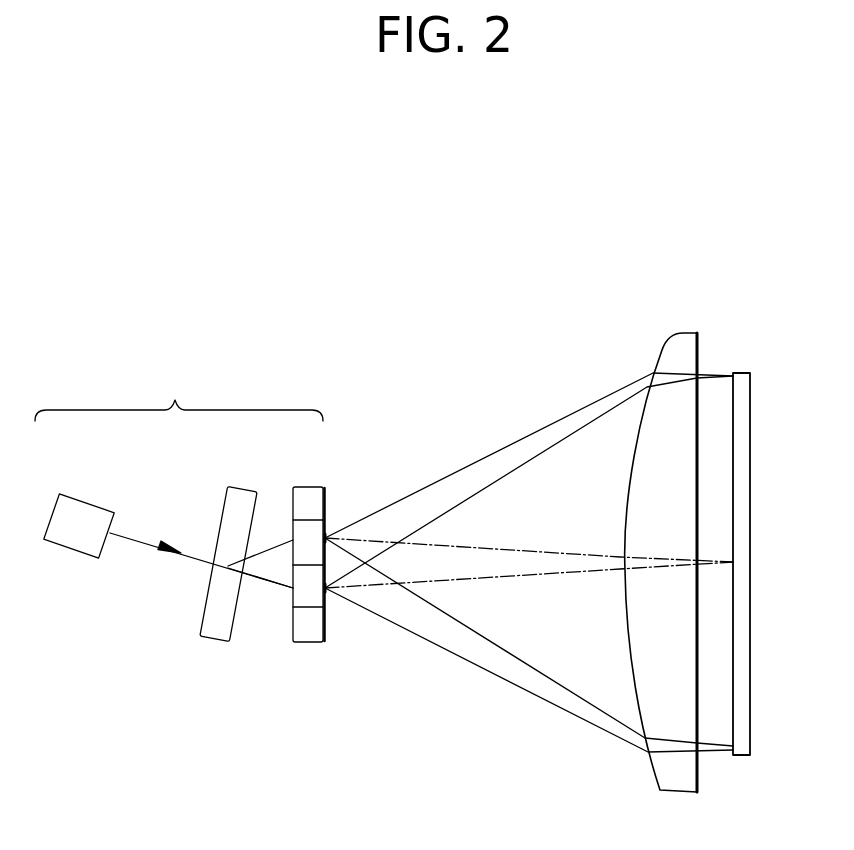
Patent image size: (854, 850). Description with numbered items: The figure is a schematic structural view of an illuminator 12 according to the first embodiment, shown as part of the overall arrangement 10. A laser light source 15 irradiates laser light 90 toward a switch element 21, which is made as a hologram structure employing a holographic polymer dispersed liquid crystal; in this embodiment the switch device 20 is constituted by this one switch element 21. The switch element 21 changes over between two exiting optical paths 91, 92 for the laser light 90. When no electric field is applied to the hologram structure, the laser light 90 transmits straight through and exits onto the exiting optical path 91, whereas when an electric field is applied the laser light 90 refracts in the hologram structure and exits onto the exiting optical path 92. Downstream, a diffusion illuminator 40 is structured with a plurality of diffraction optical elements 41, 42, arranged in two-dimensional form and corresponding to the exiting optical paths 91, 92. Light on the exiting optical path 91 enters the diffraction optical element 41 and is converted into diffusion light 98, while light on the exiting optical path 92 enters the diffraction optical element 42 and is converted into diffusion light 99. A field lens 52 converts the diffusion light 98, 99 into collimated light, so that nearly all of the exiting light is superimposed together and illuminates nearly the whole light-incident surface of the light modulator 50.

The projector 10 is at (87, 218).
The illuminator 12 is at (179, 392).
The laser light source 15 is at (67, 553).
The switch device 20 is at (222, 606).
The switch element 21 is at (213, 647).
The diffusion illuminator 40 is at (307, 645).
The diffusion-illuminating element 41 is at (330, 594).
The diffusion-illuminating element 42 is at (328, 530).
The light modulator 50 is at (737, 371).
The field lens 52 is at (680, 331).
The laser light 90 is at (185, 553).
The exiting optical path 91 is at (265, 582).
The exiting optical path 92 is at (273, 545).
The diffusion light 98 is at (453, 657).
The diffusion light 99 is at (490, 452).